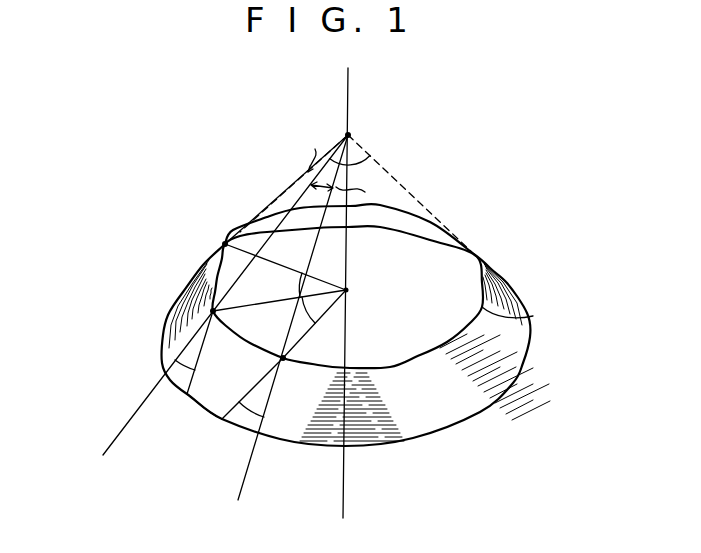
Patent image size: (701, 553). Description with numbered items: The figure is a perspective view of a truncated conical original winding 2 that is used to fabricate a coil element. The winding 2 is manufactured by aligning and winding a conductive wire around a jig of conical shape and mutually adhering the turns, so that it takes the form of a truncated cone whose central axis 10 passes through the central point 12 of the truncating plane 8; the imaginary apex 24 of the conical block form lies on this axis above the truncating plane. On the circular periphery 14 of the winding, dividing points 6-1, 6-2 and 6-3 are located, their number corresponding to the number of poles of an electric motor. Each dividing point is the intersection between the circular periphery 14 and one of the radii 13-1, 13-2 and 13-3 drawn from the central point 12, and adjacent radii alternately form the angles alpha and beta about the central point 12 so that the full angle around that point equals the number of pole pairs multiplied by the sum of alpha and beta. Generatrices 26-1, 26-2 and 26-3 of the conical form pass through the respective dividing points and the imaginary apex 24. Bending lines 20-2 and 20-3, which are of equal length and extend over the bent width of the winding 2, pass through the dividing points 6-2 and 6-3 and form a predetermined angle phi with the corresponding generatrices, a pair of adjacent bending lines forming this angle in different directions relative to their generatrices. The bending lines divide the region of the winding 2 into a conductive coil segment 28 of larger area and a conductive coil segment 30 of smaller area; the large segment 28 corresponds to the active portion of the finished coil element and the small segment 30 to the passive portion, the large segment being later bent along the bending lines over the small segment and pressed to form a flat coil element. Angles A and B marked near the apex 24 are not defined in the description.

The central axis 10 is at (350, 94).
The imaginary apex 24 is at (350, 136).
The truncated conical original winding 2 is at (420, 180).
The generatrix 26-1 is at (304, 176).
The generatrix 26-2 is at (258, 216).
The generatrix 26-3 is at (318, 250).
The conductive coil segment 28 is at (163, 364).
The truncating plane 8 is at (260, 347).
The circular periphery 14 is at (533, 316).
The central point 12 is at (349, 290).
The radius 13-1 is at (292, 270).
The radius 13-2 is at (268, 303).
The radius 13-3 is at (312, 328).
The dividing point 6-1 is at (222, 245).
The dividing point 6-2 is at (211, 311).
The dividing point 6-3 is at (285, 362).
The bending line 20-2 is at (206, 345).
The bending line 20-3 is at (221, 427).
The conductive coil segment 30 is at (206, 396).
The angle A is at (312, 150).
The angle B is at (346, 193).